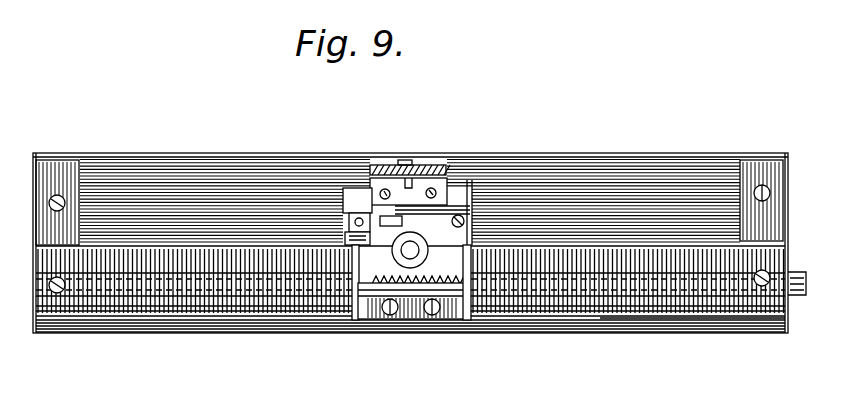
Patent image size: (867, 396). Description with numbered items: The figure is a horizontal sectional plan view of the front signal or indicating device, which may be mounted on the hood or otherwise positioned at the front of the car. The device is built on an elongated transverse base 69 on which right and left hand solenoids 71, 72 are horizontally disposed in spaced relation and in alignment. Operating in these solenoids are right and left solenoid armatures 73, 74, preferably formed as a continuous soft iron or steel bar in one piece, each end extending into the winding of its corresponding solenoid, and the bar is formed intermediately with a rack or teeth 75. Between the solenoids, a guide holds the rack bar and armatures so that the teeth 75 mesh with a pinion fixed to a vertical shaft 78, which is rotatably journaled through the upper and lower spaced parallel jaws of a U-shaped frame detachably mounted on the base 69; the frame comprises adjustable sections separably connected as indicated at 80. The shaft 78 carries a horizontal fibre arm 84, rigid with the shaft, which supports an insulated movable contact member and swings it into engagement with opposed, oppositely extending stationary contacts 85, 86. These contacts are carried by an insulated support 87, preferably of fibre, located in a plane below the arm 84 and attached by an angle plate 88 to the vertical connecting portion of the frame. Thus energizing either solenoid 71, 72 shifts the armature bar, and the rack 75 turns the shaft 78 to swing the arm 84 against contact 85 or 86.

The base 69 is at (597, 160).
The right hand solenoid 71 is at (213, 325).
The left hand solenoid 72 is at (662, 325).
The right solenoid armature 73 is at (262, 325).
The left solenoid armature 74 is at (600, 323).
The rack or teeth 75 is at (410, 327).
The vertical shaft 78 is at (452, 322).
The separable connection of adjustable sections 80 is at (412, 162).
The horizontal fibre arm 84 is at (484, 160).
The stationary contact 85 is at (493, 322).
The stationary contact 86 is at (334, 323).
The insulated support 87 is at (357, 158).
The angle plate 88 is at (463, 160).